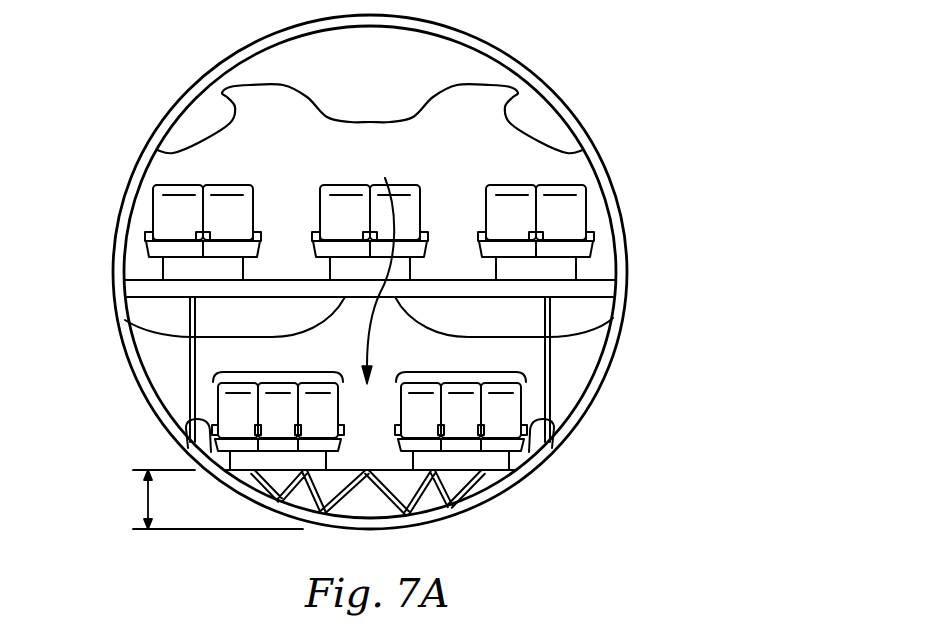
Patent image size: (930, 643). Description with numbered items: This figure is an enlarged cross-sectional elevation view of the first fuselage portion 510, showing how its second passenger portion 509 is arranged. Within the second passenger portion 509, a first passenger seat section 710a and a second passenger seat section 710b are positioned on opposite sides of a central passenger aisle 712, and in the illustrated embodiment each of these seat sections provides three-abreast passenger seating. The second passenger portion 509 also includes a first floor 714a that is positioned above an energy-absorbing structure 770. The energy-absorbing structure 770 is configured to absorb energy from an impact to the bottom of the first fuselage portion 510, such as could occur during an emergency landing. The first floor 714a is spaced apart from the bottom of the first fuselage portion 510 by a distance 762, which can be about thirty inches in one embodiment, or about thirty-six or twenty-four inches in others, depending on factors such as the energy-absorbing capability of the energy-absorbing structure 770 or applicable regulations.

The first fuselage portion 510 is at (505, 58).
The second passenger portion 509 is at (320, 349).
The central passenger aisle 712 is at (385, 270).
The first passenger seat section 710a is at (284, 374).
The second passenger seat section 710b is at (456, 374).
The first floor 714a is at (545, 455).
The energy-absorbing structure 770 is at (447, 512).
The distance 762 is at (146, 500).